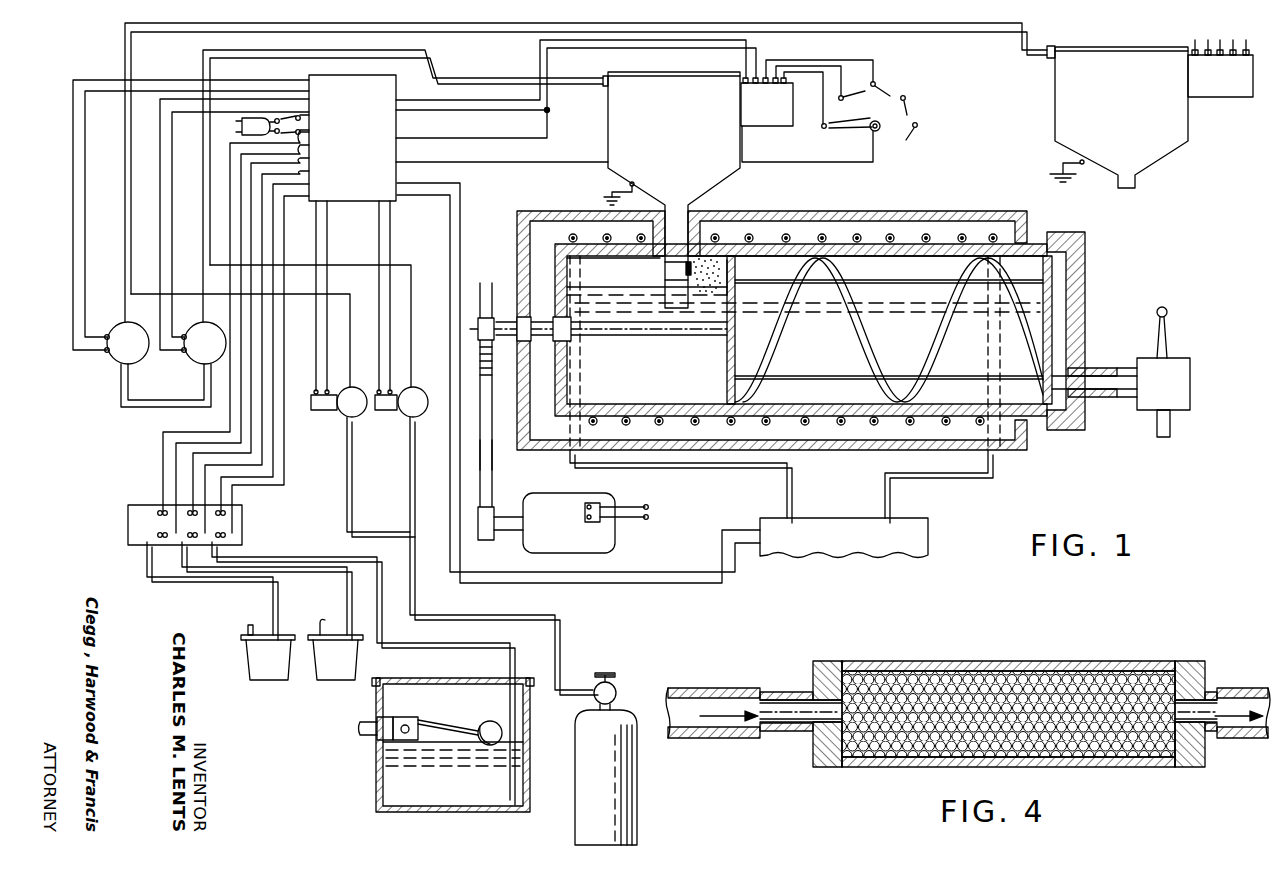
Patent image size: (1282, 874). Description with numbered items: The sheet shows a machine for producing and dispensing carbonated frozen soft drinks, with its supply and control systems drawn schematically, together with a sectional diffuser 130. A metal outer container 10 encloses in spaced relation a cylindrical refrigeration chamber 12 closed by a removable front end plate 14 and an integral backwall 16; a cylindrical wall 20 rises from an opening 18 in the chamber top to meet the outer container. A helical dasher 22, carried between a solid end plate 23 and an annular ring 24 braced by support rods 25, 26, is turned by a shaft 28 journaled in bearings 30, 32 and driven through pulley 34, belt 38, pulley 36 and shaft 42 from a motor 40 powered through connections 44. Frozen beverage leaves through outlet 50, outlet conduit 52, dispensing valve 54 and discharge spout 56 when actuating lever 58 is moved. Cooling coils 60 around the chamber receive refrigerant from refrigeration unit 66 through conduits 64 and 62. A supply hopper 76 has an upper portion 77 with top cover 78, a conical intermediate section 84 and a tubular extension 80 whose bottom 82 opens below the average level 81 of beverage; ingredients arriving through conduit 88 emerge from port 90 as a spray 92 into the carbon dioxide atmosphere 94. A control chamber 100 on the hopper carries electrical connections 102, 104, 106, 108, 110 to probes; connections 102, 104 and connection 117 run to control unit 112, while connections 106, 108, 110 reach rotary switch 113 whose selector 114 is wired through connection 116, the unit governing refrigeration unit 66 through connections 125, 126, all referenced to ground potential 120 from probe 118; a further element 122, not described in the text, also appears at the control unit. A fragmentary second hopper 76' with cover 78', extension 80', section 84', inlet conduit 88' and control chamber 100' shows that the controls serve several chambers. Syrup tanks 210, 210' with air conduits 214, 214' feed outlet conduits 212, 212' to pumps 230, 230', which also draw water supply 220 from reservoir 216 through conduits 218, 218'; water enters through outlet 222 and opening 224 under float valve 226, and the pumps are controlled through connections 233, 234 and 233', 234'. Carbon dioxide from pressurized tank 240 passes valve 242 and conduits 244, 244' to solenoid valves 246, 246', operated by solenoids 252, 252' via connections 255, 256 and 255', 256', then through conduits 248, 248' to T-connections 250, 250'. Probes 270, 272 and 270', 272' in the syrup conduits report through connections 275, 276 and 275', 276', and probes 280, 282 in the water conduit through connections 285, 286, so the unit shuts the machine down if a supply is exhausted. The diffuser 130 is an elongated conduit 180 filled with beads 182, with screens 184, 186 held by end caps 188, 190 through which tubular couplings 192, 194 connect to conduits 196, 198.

In FIG. 1, the outer container 10 is at (920, 212).
In FIG. 1, the refrigeration chamber 12 is at (882, 258).
In FIG. 1, the front end plate 14 is at (1085, 241).
In FIG. 1, the backwall 16 is at (560, 262).
In FIG. 1, the opening 18 is at (664, 262).
In FIG. 1, the cylindrical wall 20 is at (645, 237).
In FIG. 1, the helical dasher 22 is at (845, 360).
In FIG. 1, the solid end plate 23 is at (735, 354).
In FIG. 1, the annular ring 24 is at (1043, 370).
In FIG. 1, the support rod 25 is at (914, 281).
In FIG. 1, the support rod 26 is at (906, 378).
In FIG. 1, the shaft 28 is at (660, 337).
In FIG. 1, the bearing 30 is at (560, 341).
In FIG. 1, the bearing 32 is at (538, 312).
In FIG. 1, the pulley 34 is at (500, 278).
In FIG. 1, the pulley 36 is at (496, 540).
In FIG. 1, the belt 38 is at (490, 471).
In FIG. 1, the motor 40 is at (553, 493).
In FIG. 1, the shaft 42 is at (503, 517).
In FIG. 1, the connections 44 is at (624, 522).
In FIG. 1, the outlet 50 is at (1070, 383).
In FIG. 1, the outlet conduit 52 is at (1100, 368).
In FIG. 1, the dispensing valve 54 is at (1190, 386).
In FIG. 1, the discharge spout 56 is at (1170, 434).
In FIG. 1, the actuating lever 58 is at (1167, 312).
In FIG. 1, the cooling coils 60 is at (890, 237).
In FIG. 1, the refrigerant conduit 62 is at (735, 478).
In FIG. 1, the refrigerant conduit 64 is at (975, 488).
In FIG. 1, the refrigeration unit 66 is at (928, 535).
In FIG. 1, the supply hopper 76 is at (594, 139).
In FIG. 1, the upper portion 77 is at (740, 150).
In FIG. 1, the top cover 78 is at (671, 157).
In FIG. 1, the conduit 80 is at (655, 287).
In FIG. 1, the average level 81 is at (606, 292).
In FIG. 1, the bottom 82 is at (673, 310).
In FIG. 1, the intermediate section 84 is at (745, 189).
In FIG. 1, the conduit 88 is at (390, 186).
In FIG. 1, the port 90 is at (684, 268).
In FIG. 1, the spray 92 is at (722, 300).
In FIG. 1, the atmosphere 94 is at (618, 283).
In FIG. 1, the control chamber 100 is at (767, 113).
In FIG. 1, the electrical connection 102 is at (476, 110).
In FIG. 1, the electrical connection 104 is at (765, 46).
In FIG. 1, the electrical connection 106 is at (788, 60).
In FIG. 1, the electrical connection 108 is at (830, 58).
In FIG. 1, the electrical connection 110 is at (824, 72).
In FIG. 1, the control unit 112 is at (396, 130).
In FIG. 1, the rotary switch 113 is at (870, 147).
In FIG. 1, the selector 114 is at (855, 113).
In FIG. 1, the electrical connection 116 is at (533, 160).
In FIG. 1, the electrical connection 117 is at (466, 137).
In FIG. 1, the electrical probe 118 is at (620, 182).
In FIG. 1, the ground potential 120 is at (600, 197).
In FIG. 1, the plug 122 is at (238, 130).
In FIG. 1, the electrical connection 125 is at (461, 192).
In FIG. 1, the electrical connection 126 is at (460, 213).
In FIG. 1, the supply hopper 76' is at (1041, 129).
In FIG. 1, the top cover 78' is at (1117, 105).
In FIG. 1, the conduit 80' is at (1084, 178).
In FIG. 1, the intermediate section 84' is at (1170, 162).
In FIG. 1, the conduit 88' is at (569, 172).
In FIG. 1, the control chamber 100' is at (1220, 80).
In FIG. 4, the diffuser 130 is at (990, 647).
In FIG. 4, the elongated conduit 180 is at (892, 661).
In FIG. 4, the beads 182 is at (1048, 674).
In FIG. 4, the screen 184 is at (866, 652).
In FIG. 4, the screen 186 is at (1175, 672).
In FIG. 4, the end cap 188 is at (813, 672).
In FIG. 4, the end cap 190 is at (1205, 672).
In FIG. 4, the tubular coupling 192 is at (810, 740).
In FIG. 4, the tubular coupling 194 is at (1212, 742).
In FIG. 4, the conduit 196 is at (707, 683).
In FIG. 4, the conduit 198 is at (1222, 692).
In FIG. 1, the syrup tank 210 is at (335, 667).
In FIG. 1, the syrup tank 210' is at (246, 659).
In FIG. 1, the outlet conduit 212 is at (299, 591).
In FIG. 1, the outlet conduit 212' is at (235, 591).
In FIG. 1, the conduit 214 is at (308, 617).
In FIG. 1, the conduit 214' is at (230, 625).
In FIG. 1, the tank 216 is at (426, 678).
In FIG. 1, the outlet conduit 218 is at (330, 593).
In FIG. 1, the outlet conduit 218' is at (135, 392).
In FIG. 1, the water supply 220 is at (458, 795).
In FIG. 1, the outlet 222 is at (370, 723).
In FIG. 1, the opening 224 is at (408, 714).
In FIG. 1, the float valve 226 is at (483, 722).
In FIG. 1, the pump 230 is at (184, 354).
In FIG. 1, the pump 230' is at (104, 354).
In FIG. 1, the electrical connection 233 is at (239, 220).
In FIG. 1, the electrical connection 233' is at (170, 206).
In FIG. 1, the electrical connection 234 is at (261, 221).
In FIG. 1, the electrical connection 234' is at (192, 207).
In FIG. 1, the pressurized tank 240 is at (637, 813).
In FIG. 1, the valve 242 is at (612, 690).
In FIG. 1, the outlet conduit 244 is at (486, 556).
In FIG. 1, the outlet conduit 244' is at (355, 477).
In FIG. 1, the solenoid valve 246 is at (398, 419).
In FIG. 1, the solenoid valve 246' is at (332, 419).
In FIG. 1, the conduit 248 is at (318, 317).
In FIG. 1, the conduit 248' is at (250, 330).
In FIG. 1, the T-connection 250 is at (189, 267).
In FIG. 1, the T-connection 250' is at (108, 295).
In FIG. 1, the solenoid 252 is at (377, 415).
In FIG. 1, the solenoid 252' is at (312, 415).
In FIG. 1, the electrical connection 255 is at (407, 297).
In FIG. 1, the electrical connection 255' is at (346, 297).
In FIG. 1, the electrical connection 256 is at (402, 297).
In FIG. 1, the electrical connection 256' is at (339, 297).
In FIG. 1, the electrical probe 270 is at (162, 525).
In FIG. 1, the electrical probe 270' is at (126, 500).
In FIG. 1, the electrical probe 272 is at (145, 552).
In FIG. 1, the electrical probe 272' is at (125, 542).
In FIG. 1, the electrical connection 275 is at (272, 329).
In FIG. 1, the electrical connection 275' is at (259, 315).
In FIG. 1, the electrical connection 276 is at (278, 346).
In FIG. 1, the electrical connection 276' is at (265, 333).
In FIG. 1, the electrical probe 280 is at (226, 513).
In FIG. 1, the electrical probe 282 is at (226, 535).
In FIG. 1, the electrical connection 285 is at (286, 342).
In FIG. 1, the electrical connection 286 is at (291, 359).